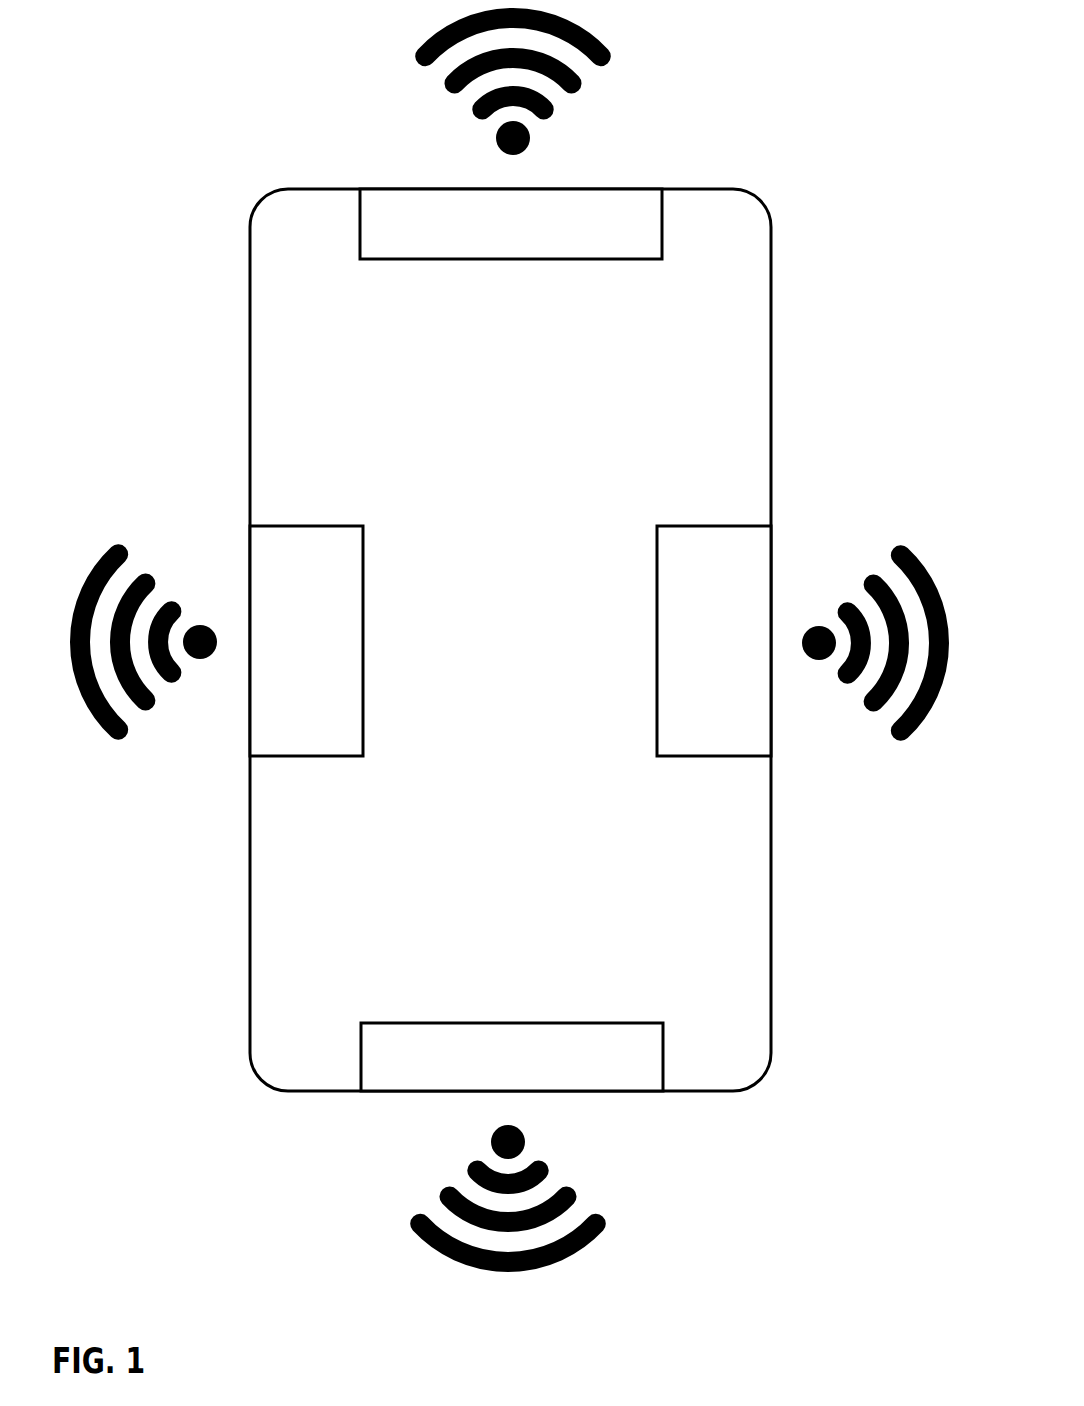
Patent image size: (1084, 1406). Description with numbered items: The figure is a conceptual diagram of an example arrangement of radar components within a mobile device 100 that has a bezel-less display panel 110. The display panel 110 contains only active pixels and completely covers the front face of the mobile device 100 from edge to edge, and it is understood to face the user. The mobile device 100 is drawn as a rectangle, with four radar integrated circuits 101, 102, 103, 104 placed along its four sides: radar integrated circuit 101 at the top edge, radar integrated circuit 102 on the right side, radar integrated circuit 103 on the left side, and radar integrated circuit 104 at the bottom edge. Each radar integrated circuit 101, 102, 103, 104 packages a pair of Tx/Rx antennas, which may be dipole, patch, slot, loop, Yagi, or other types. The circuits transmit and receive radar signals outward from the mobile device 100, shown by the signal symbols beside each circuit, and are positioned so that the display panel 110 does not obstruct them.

The mobile device 100 is at (952, 27).
The display panel 110 is at (250, 302).
The radar integrated circuit 101 is at (638, 237).
The radar integrated circuit 102 is at (738, 703).
The radar integrated circuit 103 is at (330, 703).
The radar integrated circuit 104 is at (637, 1067).